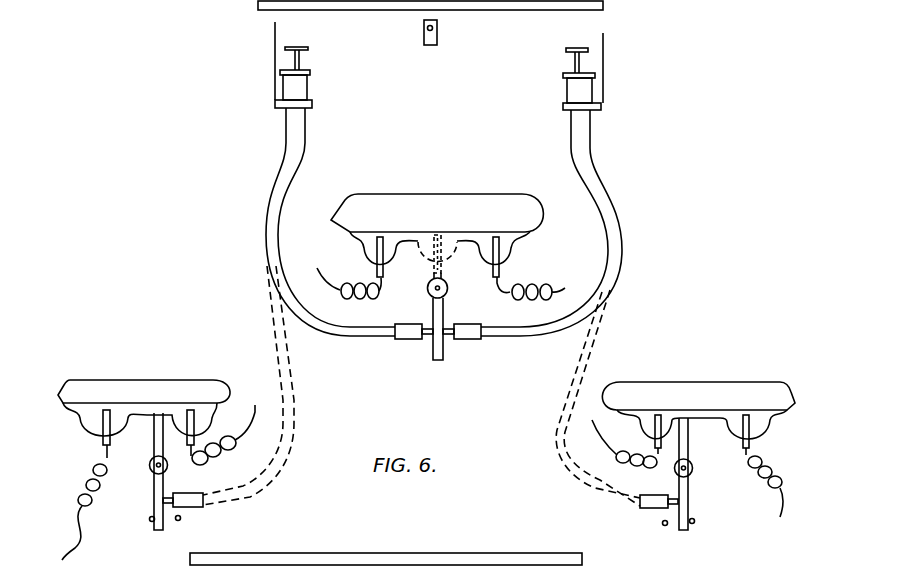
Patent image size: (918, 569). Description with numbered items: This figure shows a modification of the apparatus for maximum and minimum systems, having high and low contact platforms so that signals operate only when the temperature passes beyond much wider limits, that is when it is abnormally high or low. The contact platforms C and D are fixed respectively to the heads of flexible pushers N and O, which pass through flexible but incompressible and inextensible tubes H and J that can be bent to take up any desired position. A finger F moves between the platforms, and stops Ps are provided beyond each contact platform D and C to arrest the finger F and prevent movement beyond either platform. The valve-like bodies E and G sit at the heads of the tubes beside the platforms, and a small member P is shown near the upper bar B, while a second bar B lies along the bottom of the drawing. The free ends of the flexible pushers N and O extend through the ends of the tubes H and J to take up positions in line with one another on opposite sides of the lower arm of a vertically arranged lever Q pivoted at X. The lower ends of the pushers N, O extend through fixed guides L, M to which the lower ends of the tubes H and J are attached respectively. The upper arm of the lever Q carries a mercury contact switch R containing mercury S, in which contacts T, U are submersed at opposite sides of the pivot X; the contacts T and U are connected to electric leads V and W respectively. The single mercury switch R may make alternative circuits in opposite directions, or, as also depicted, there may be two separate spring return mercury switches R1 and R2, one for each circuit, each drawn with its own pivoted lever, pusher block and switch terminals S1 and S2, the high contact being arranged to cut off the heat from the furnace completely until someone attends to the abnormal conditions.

The bar B is at (492, 12).
The stops Ps is at (274, 72).
The platform C is at (309, 49).
The valve E is at (300, 88).
The platform D is at (577, 46).
The valve G is at (585, 93).
The pivot P is at (428, 30).
The finger F is at (438, 37).
The tube H is at (273, 197).
The tube J is at (604, 196).
The mercury contact switch R is at (443, 205).
The mercury S is at (403, 235).
The contact T is at (384, 272).
The contact U is at (500, 270).
The electric lead V is at (345, 271).
The electric lead W is at (545, 289).
The pivot X is at (448, 288).
The lever Q is at (437, 362).
The fixed guide L is at (410, 340).
The flexible pusher N is at (428, 338).
The flexible pusher O is at (446, 336).
The fixed guide M is at (478, 340).
The spring return mercury switch R1 is at (148, 388).
The spring return mercury switch R2 is at (700, 388).
The switch contact S1 is at (150, 522).
The switch contact S2 is at (178, 522).